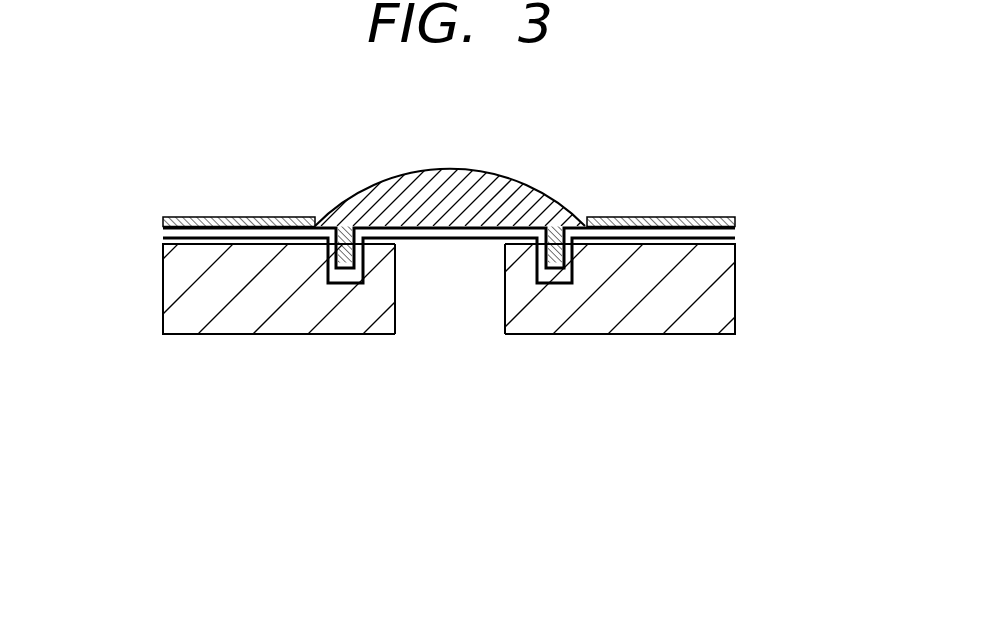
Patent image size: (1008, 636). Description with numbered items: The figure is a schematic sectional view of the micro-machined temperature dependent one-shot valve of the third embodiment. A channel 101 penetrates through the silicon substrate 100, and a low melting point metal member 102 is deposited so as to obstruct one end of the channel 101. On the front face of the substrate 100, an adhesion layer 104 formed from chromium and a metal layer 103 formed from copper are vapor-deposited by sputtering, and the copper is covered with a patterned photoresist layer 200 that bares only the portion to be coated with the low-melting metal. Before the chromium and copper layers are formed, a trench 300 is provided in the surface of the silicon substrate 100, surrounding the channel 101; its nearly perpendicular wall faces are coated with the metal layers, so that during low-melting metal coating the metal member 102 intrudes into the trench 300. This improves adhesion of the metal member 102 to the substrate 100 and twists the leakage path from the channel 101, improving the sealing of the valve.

The silicon substrate 100 is at (723, 293).
The channel 101 is at (447, 312).
The low melting point metal member 102 is at (453, 178).
The metal layer 103 is at (163, 231).
The adhesion layer 104 is at (163, 240).
The photoresist layer 200 is at (665, 220).
The trench 300 is at (344, 250).